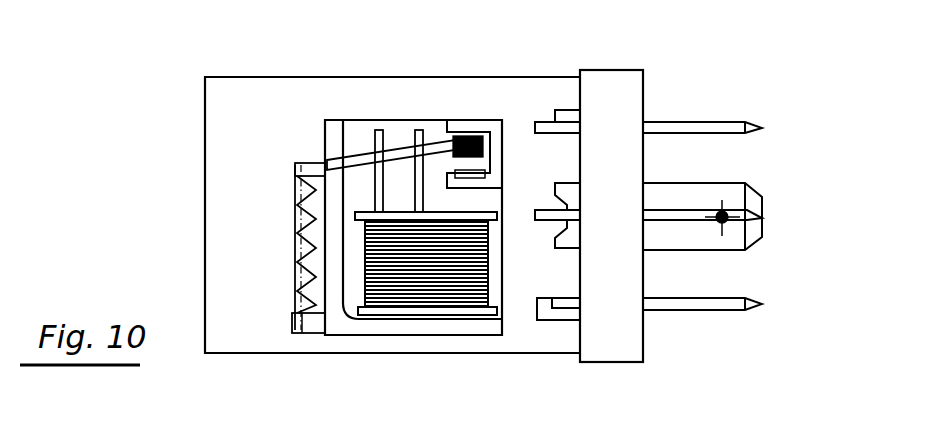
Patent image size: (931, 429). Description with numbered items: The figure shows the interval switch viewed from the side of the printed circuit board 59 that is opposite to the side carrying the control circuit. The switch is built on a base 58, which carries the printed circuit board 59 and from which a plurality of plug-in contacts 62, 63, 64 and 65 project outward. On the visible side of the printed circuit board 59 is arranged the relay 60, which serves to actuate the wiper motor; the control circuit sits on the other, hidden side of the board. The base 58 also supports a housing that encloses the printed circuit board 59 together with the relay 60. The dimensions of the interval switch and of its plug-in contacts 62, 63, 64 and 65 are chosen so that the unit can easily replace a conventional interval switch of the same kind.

The base 58 is at (637, 85).
The printed circuit board 59 is at (318, 83).
The relay 60 is at (355, 323).
The plug-in contact 62 is at (763, 304).
The plug-in contact 63 is at (763, 128).
The plug-in contact 64 is at (762, 196).
The plug-in contact 65 is at (762, 223).